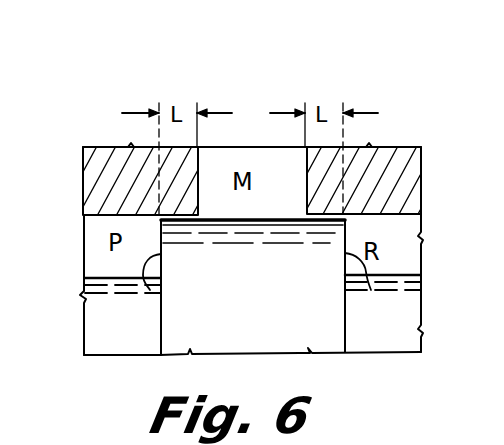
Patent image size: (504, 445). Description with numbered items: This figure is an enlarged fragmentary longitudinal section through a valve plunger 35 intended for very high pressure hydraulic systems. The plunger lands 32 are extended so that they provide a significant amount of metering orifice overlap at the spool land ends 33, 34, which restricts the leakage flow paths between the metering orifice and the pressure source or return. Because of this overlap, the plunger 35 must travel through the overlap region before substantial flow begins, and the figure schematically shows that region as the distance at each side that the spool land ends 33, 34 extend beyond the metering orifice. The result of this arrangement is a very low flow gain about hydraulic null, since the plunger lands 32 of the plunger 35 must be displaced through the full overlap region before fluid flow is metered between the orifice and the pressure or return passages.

The plunger lands 32 is at (250, 221).
The spool land end 33 is at (150, 290).
The spool land end 34 is at (371, 290).
The plunger 35 is at (105, 335).